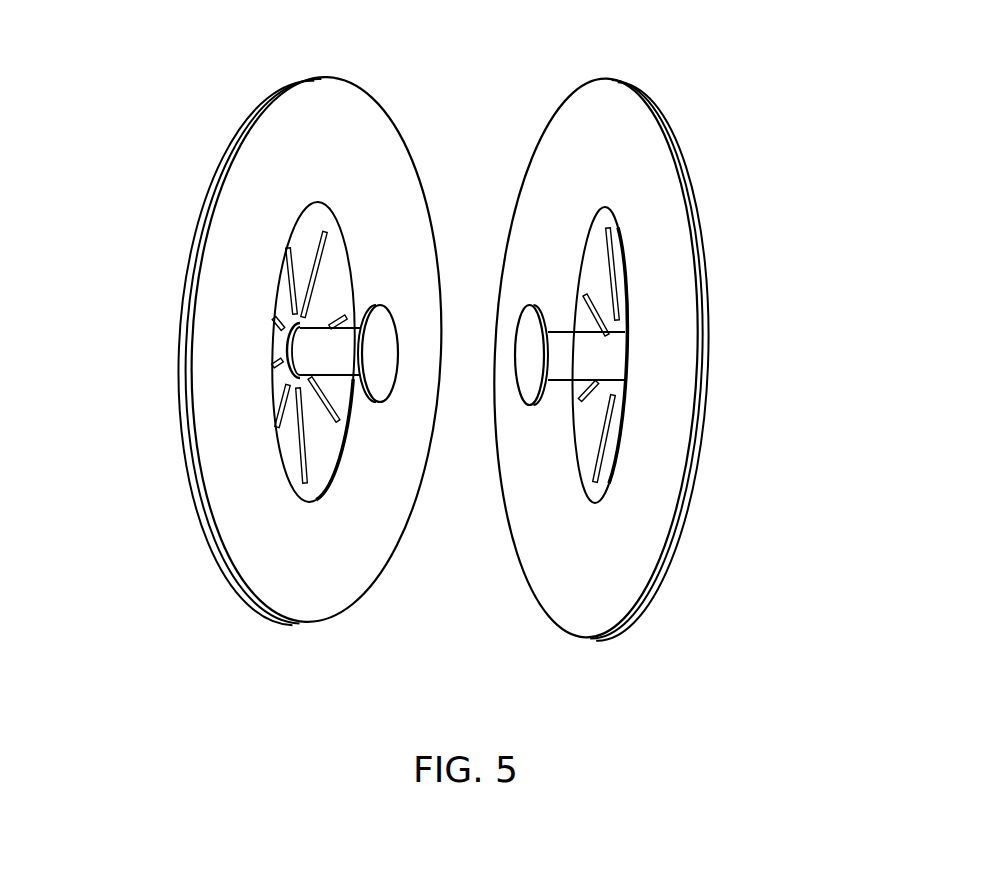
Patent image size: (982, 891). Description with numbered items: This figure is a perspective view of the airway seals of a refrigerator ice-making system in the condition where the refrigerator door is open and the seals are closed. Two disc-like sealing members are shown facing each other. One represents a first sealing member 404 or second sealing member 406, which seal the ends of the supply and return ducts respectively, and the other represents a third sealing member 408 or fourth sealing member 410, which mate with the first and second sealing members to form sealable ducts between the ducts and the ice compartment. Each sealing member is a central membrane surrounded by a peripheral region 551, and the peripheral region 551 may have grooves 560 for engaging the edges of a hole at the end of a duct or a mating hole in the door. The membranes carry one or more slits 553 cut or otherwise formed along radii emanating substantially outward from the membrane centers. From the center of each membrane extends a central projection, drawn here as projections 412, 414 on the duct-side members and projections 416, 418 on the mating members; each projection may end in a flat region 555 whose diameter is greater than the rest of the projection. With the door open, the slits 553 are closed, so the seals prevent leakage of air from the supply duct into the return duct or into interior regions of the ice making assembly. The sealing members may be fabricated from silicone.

The peripheral region 551 is at (248, 548).
The slit 553 is at (302, 463).
The flat region 555 is at (527, 350).
The groove 560 is at (278, 80).
The projection 418 is at (218, 334).
The projection 416 is at (302, 348).
The fourth sealing member 410 is at (198, 308).
The third sealing member 408 is at (277, 347).
The second sealing member 406 is at (698, 338).
The first sealing member 404 is at (603, 272).
The projection 414 is at (704, 332).
The projection 412 is at (593, 355).